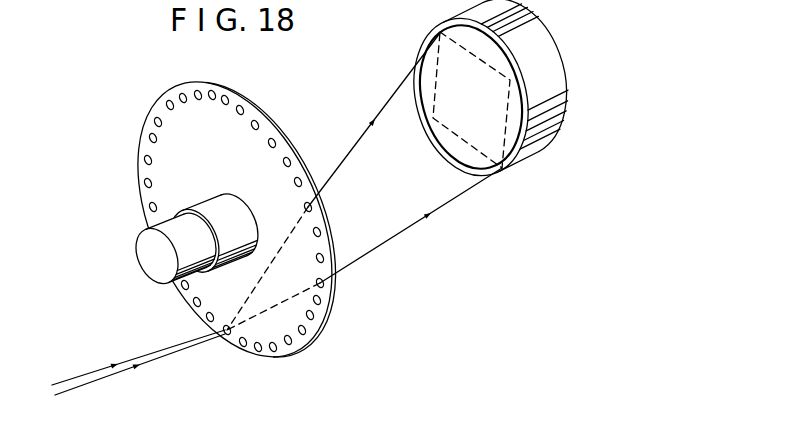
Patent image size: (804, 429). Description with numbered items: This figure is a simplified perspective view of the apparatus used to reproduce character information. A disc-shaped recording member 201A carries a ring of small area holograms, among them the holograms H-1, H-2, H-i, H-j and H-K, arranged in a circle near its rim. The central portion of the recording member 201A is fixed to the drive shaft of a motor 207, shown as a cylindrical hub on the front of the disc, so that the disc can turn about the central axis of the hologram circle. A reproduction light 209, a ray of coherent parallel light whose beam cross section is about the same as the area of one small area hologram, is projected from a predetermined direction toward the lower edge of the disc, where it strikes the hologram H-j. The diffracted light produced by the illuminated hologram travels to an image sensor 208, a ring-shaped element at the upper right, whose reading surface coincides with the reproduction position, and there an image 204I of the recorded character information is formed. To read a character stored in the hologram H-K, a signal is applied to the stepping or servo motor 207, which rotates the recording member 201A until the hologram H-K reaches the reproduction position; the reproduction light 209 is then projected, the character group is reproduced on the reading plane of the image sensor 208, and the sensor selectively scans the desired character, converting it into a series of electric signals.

The recording member 201A is at (257, 88).
The hologram H-2 is at (212, 89).
The hologram H-1 is at (226, 106).
The hologram H-K is at (291, 161).
The hologram H-i is at (204, 318).
The hologram H-j is at (226, 337).
The image 204I is at (455, 128).
The motor 207 is at (139, 259).
The image sensor 208 is at (538, 150).
The reproduction light 209 is at (126, 368).